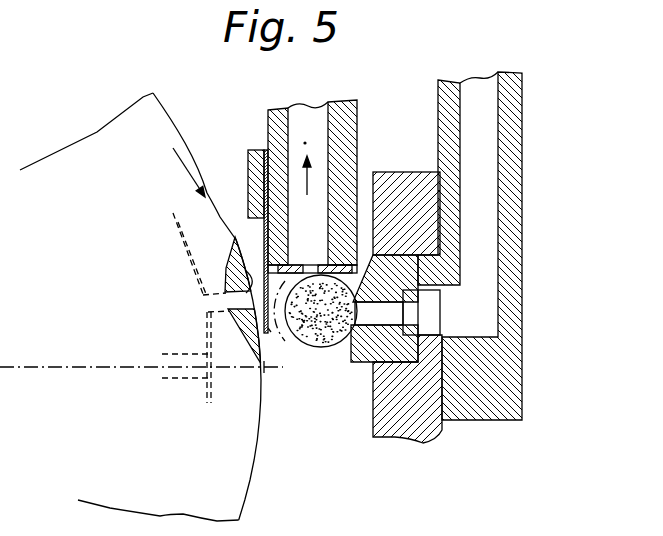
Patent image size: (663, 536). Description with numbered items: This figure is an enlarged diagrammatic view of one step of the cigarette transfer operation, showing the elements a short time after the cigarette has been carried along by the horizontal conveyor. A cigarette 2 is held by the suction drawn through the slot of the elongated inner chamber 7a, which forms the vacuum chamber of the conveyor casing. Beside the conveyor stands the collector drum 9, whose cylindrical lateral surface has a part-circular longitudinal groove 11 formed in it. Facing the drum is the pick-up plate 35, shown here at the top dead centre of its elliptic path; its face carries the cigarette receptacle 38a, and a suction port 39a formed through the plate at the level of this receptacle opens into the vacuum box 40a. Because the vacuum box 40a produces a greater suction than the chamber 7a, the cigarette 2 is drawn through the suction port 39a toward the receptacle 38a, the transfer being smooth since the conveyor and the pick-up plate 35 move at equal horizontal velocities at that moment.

The cigarette 2 is at (320, 348).
The inner chamber 7a is at (302, 216).
The collector drum 9 is at (253, 473).
The longitudinal groove 11 is at (242, 283).
The pick-up plate 35 is at (422, 168).
The cigarette receptacle 38a is at (357, 366).
The suction port 39a is at (474, 282).
The vacuum box 40a is at (485, 165).